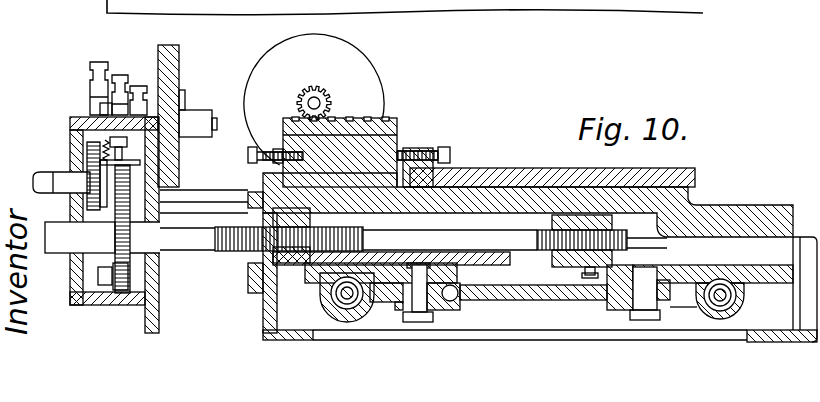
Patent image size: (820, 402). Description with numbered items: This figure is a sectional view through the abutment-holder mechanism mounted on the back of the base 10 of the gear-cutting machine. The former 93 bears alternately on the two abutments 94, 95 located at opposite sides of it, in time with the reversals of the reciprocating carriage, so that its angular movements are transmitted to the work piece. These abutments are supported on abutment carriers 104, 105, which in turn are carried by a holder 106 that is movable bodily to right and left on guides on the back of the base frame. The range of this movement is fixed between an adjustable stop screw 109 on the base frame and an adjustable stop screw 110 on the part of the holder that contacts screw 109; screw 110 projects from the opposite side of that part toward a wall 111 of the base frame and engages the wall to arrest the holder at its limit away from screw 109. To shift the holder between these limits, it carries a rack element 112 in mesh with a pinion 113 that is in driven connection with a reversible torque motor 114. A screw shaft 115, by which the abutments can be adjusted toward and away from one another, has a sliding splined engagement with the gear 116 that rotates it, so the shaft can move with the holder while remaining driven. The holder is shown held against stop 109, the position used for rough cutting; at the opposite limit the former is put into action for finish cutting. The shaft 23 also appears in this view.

The base 10 is at (697, 174).
The drive shaft 23 is at (215, 115).
The former 93 is at (550, 300).
The abutment 94 is at (459, 302).
The abutment 95 is at (607, 306).
The abutment carrier 104 is at (476, 253).
The abutment carrier 105 is at (778, 266).
The holder 106 is at (480, 198).
The adjustable stop screw 109 is at (403, 145).
The adjustable stop screw 110 is at (248, 155).
The wall 111 is at (179, 58).
The rack element 112 is at (377, 119).
The pinion 113 is at (317, 87).
The reversible torque motor 114 is at (371, 80).
The screw shaft 115 is at (219, 254).
The gear 116 is at (112, 236).